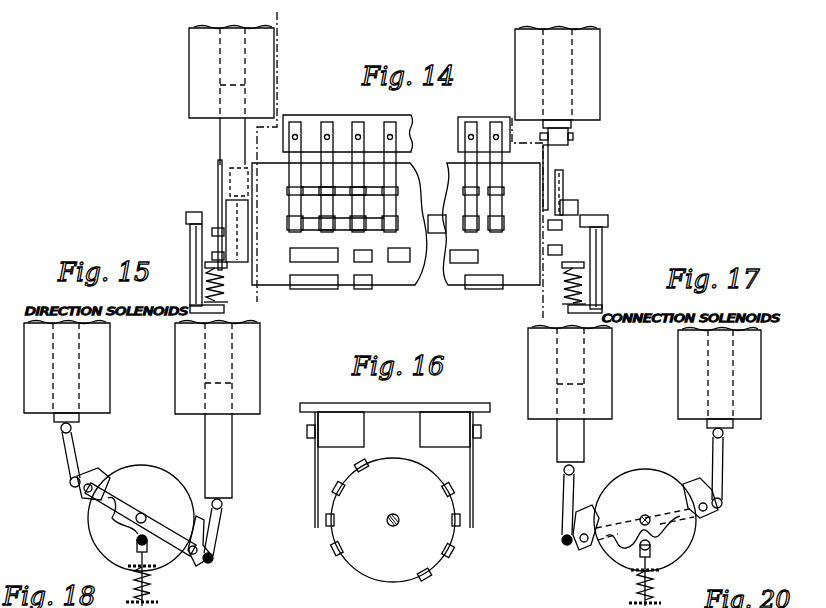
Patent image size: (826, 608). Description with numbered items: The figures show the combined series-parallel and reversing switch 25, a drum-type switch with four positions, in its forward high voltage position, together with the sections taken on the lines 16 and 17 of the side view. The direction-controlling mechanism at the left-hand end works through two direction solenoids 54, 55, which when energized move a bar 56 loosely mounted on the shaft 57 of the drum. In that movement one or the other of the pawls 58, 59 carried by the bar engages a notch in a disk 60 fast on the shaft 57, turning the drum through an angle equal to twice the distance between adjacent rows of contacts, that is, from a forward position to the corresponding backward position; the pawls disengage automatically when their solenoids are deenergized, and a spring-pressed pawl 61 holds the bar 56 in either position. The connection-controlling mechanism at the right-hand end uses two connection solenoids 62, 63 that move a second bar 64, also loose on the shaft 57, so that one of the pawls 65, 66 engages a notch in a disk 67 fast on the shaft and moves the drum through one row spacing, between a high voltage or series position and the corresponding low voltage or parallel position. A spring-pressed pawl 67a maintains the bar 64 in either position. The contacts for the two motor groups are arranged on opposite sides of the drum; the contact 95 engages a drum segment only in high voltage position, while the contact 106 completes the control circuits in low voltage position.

In FIG. 14, the section line 16— 16 is at (250, 21).
In FIG. 14, the section line 17— 17 is at (511, 64).
In FIG. 14, the combined series-parallel and reversing switch 25 is at (388, 276).
In FIG. 16, the combined series-parallel and reversing switch 25 is at (376, 572).
In FIG. 15, the direction solenoid 54 is at (107, 388).
In FIG. 14, the direction solenoid 55 is at (190, 75).
In FIG. 15, the direction solenoid 55 is at (257, 360).
In FIG. 15, the bar 56 is at (138, 510).
In FIG. 14, the shaft 57 is at (188, 232).
In FIG. 15, the shaft 57 is at (160, 492).
In FIG. 17, the shaft 57 is at (645, 512).
In FIG. 15, the pawl 58 is at (97, 475).
In FIG. 15, the pawl 59 is at (199, 516).
In FIG. 15, the disk 60 is at (96, 528).
In FIG. 15, the spring-pressed pawl 61 is at (125, 560).
In FIG. 17, the connection solenoid 62 is at (609, 377).
In FIG. 14, the connection solenoid 63 is at (597, 67).
In FIG. 17, the connection solenoid 63 is at (682, 374).
In FIG. 17, the bar 64 is at (612, 540).
In FIG. 17, the pawl 65 is at (582, 508).
In FIG. 17, the pawl 66 is at (692, 482).
In FIG. 17, the disk 67 is at (686, 540).
In FIG. 17, the spring-pressed pawl 67a is at (655, 548).
In FIG. 14, the contact 95 is at (496, 125).
In FIG. 14, the contact 106 is at (471, 125).